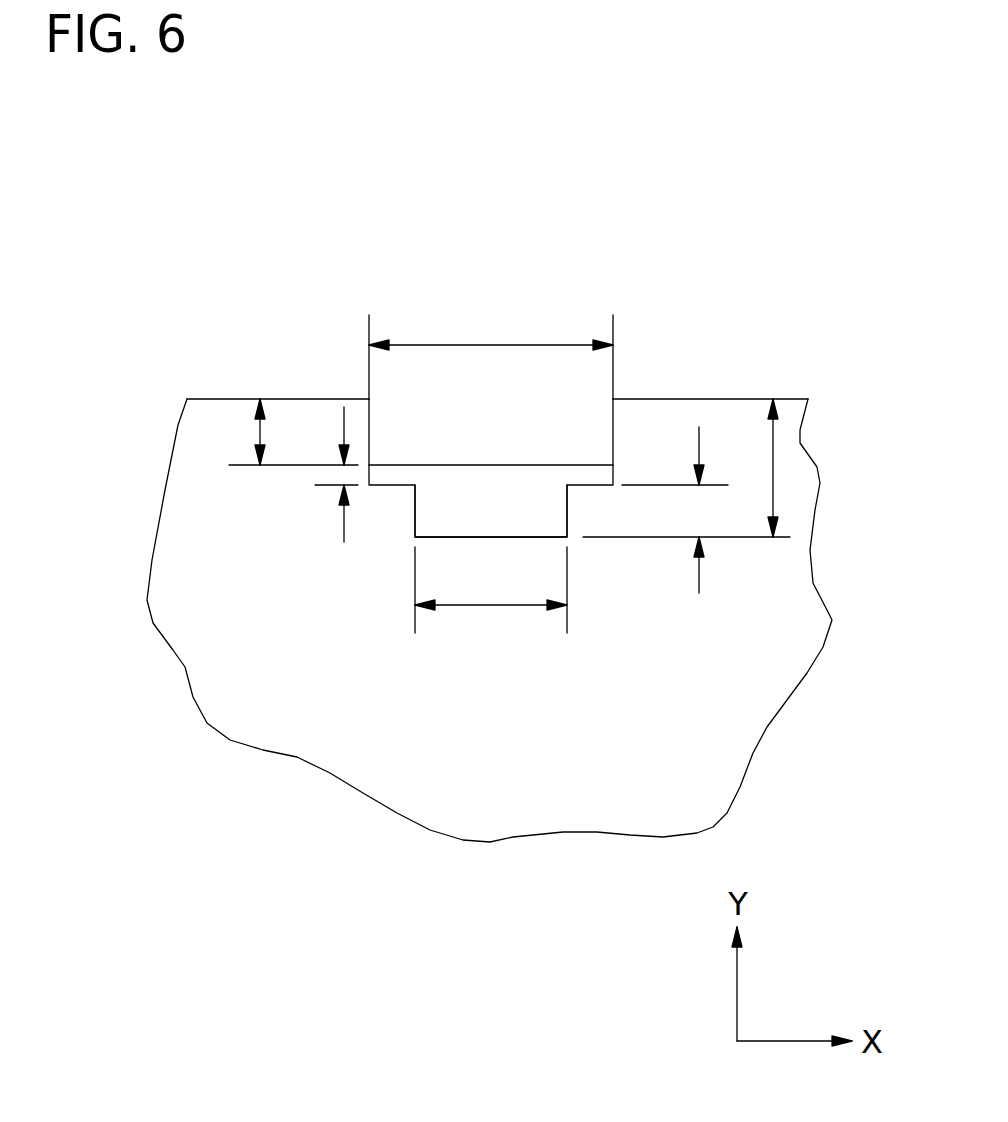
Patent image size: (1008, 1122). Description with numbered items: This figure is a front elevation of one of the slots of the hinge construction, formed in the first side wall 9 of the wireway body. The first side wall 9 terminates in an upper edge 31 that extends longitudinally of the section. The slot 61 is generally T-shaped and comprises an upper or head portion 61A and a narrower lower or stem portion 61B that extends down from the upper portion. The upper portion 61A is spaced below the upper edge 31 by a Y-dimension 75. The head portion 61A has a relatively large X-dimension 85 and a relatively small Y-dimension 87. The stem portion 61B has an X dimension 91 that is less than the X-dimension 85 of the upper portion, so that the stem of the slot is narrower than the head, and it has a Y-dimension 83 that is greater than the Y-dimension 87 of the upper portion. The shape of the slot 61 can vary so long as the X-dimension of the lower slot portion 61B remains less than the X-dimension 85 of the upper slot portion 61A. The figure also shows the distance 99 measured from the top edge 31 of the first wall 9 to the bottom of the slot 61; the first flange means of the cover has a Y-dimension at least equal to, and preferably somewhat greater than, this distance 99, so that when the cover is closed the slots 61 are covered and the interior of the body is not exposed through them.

The first side wall 9 is at (720, 752).
The upper edge 31 is at (732, 399).
The slot 61 is at (496, 453).
The upper portion 61A is at (599, 478).
The lower portion 61B is at (448, 520).
The Y-dimension 75 is at (257, 432).
The X-dimension 85 is at (488, 345).
The Y-dimension 87 is at (344, 542).
The Y-dimension 83 is at (699, 593).
The distance 99 is at (773, 468).
The X dimension 91 is at (487, 605).